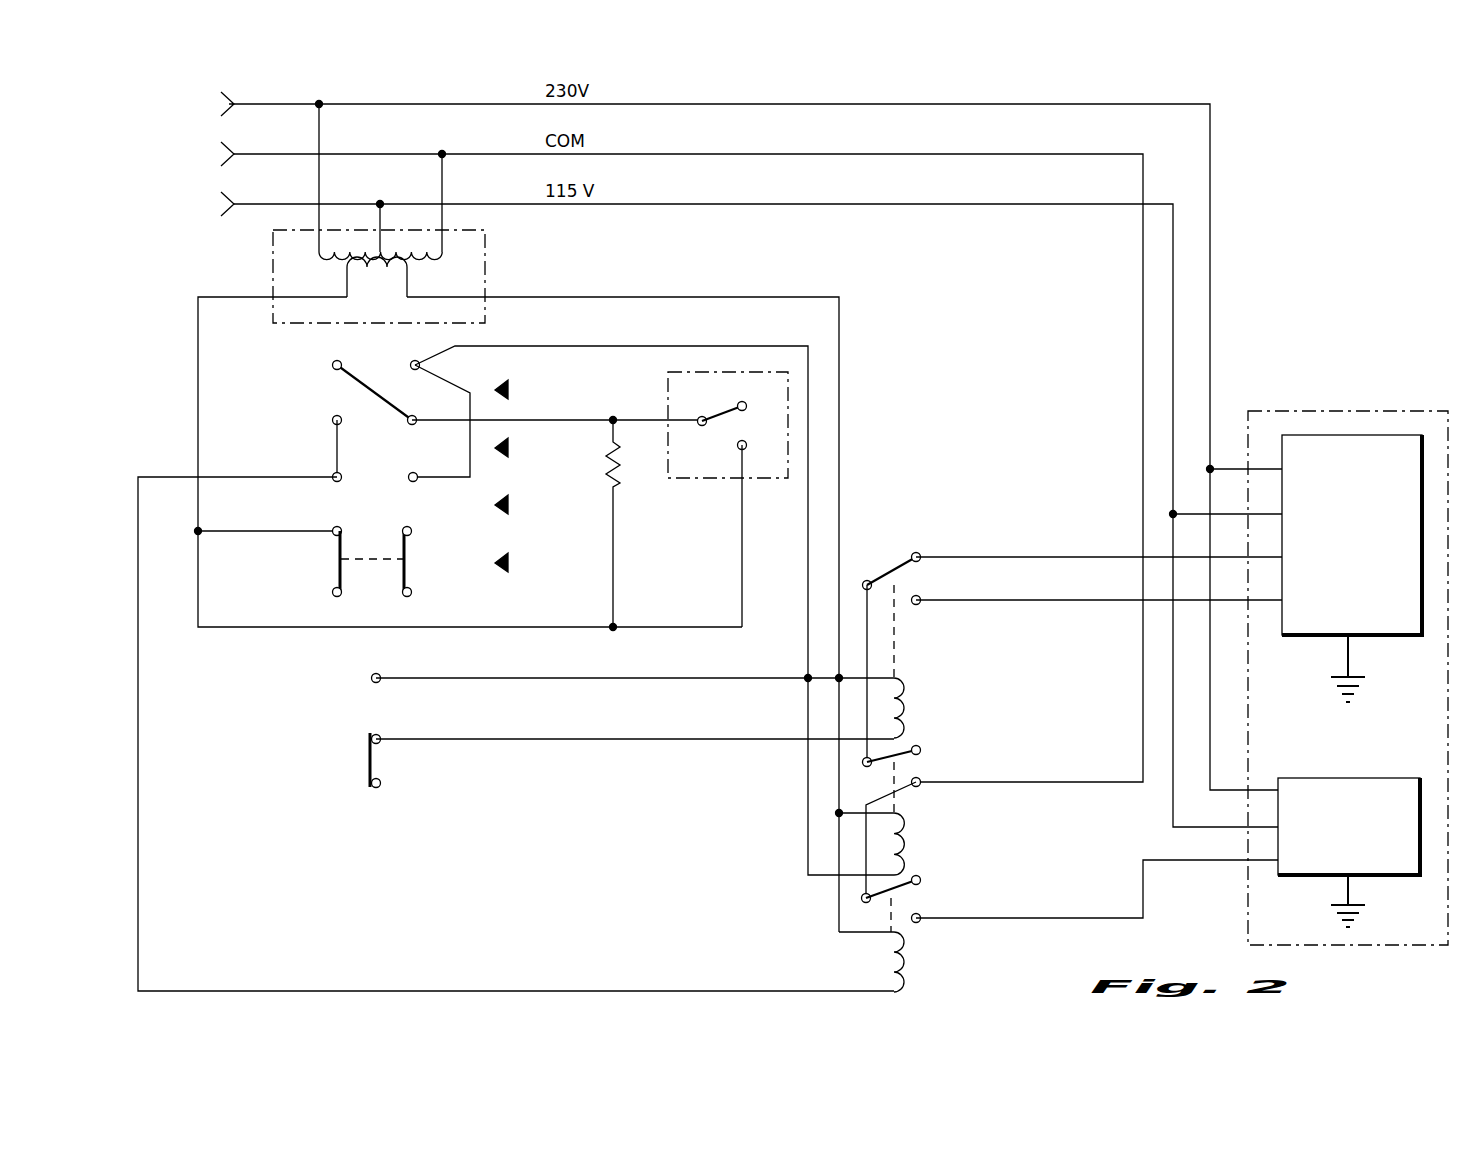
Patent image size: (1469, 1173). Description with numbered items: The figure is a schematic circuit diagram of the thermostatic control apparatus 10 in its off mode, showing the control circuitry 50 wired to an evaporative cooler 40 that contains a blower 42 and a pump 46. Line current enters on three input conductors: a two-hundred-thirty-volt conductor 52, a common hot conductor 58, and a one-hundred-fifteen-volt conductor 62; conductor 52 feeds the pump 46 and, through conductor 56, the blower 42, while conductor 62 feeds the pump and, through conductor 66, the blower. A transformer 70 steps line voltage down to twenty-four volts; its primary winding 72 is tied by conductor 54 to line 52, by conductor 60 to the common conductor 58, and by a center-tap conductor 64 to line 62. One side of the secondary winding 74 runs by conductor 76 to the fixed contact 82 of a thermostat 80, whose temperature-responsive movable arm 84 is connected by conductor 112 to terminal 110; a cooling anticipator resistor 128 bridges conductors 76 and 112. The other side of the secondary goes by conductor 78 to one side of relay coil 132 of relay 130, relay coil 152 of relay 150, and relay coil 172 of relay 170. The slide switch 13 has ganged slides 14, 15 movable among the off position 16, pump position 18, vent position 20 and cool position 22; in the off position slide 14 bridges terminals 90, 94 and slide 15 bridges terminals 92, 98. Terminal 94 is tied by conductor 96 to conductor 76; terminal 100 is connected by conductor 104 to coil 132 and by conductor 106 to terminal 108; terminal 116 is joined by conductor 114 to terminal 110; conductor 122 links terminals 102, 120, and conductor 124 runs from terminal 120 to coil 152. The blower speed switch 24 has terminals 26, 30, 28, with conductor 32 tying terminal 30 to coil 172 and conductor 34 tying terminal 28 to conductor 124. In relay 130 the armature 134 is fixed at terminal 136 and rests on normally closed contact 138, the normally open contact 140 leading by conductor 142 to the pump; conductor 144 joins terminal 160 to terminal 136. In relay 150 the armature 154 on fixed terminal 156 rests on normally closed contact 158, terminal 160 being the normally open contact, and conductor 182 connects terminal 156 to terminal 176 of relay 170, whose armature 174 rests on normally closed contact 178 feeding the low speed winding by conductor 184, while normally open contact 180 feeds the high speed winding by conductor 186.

The thermostatic control apparatus 10 is at (1303, 179).
The slide switch 13 is at (370, 548).
The slide switch 14 is at (340, 590).
The slide switch 15 is at (398, 531).
The off position 16 is at (503, 570).
The pump position 18 is at (503, 512).
The vent position 20 is at (505, 455).
The cool position 22 is at (502, 380).
The blower speed switch 24 is at (369, 748).
The terminal 26 is at (378, 789).
The terminal 28 is at (376, 674).
The terminal 30 is at (378, 732).
The conductor 32 is at (530, 739).
The conductor 34 is at (488, 678).
The evaporative cooler 40 is at (1366, 400).
The blower 42 is at (1372, 637).
The pump 46 is at (1358, 778).
The control circuitry 50 is at (195, 148).
The conductor 52 is at (240, 104).
The conductor 54 is at (319, 130).
The conductor 56 is at (1228, 469).
The common conductor 58 is at (240, 154).
The conductor 60 is at (442, 180).
The conductor 62 is at (240, 204).
The conductor 64 is at (399, 228).
The conductor 66 is at (1236, 514).
The transformer 70 is at (258, 270).
The primary winding 72 is at (338, 260).
The secondary winding 74 is at (407, 274).
The conductor 76 is at (198, 360).
The conductor 78 is at (533, 297).
The thermostat 80 is at (714, 482).
The fixed contact 82 is at (748, 448).
The movable arm 84 is at (722, 412).
The terminal 90 is at (330, 592).
The terminal 92 is at (412, 594).
The terminal 94 is at (330, 540).
The conductor 96 is at (215, 540).
The terminal 98 is at (412, 529).
The terminal 100 is at (330, 484).
The terminal 102 is at (410, 462).
The conductor 104 is at (138, 745).
The conductor 106 is at (337, 447).
The terminal 108 is at (330, 420).
The terminal 110 is at (430, 404).
The conductor 112 is at (645, 420).
The conductor 114 is at (352, 370).
The terminal 116 is at (330, 362).
The terminal 120 is at (413, 362).
The conductor 122 is at (446, 375).
The conductor 124 is at (535, 346).
The cooling anticipator resistor 128 is at (622, 490).
The relay 130 is at (946, 951).
The relay coil 132 is at (905, 985).
The armature 134 is at (912, 892).
The terminal 136 is at (860, 900).
The contact 138 is at (918, 875).
The contact 140 is at (918, 922).
The conductor 142 is at (1032, 918).
The conductor 144 is at (862, 886).
The relay 150 is at (946, 801).
The relay coil 152 is at (908, 840).
The armature 154 is at (920, 778).
The terminal 156 is at (862, 762).
The contact 158 is at (918, 745).
The terminal 160 is at (916, 790).
The relay 170 is at (955, 653).
The relay coil 172 is at (905, 688).
The armature 174 is at (913, 570).
The terminal 176 is at (866, 575).
The contact 178 is at (912, 545).
The contact 180 is at (920, 608).
The conductor 182 is at (867, 650).
The conductor 184 is at (1032, 557).
The conductor 186 is at (1032, 600).